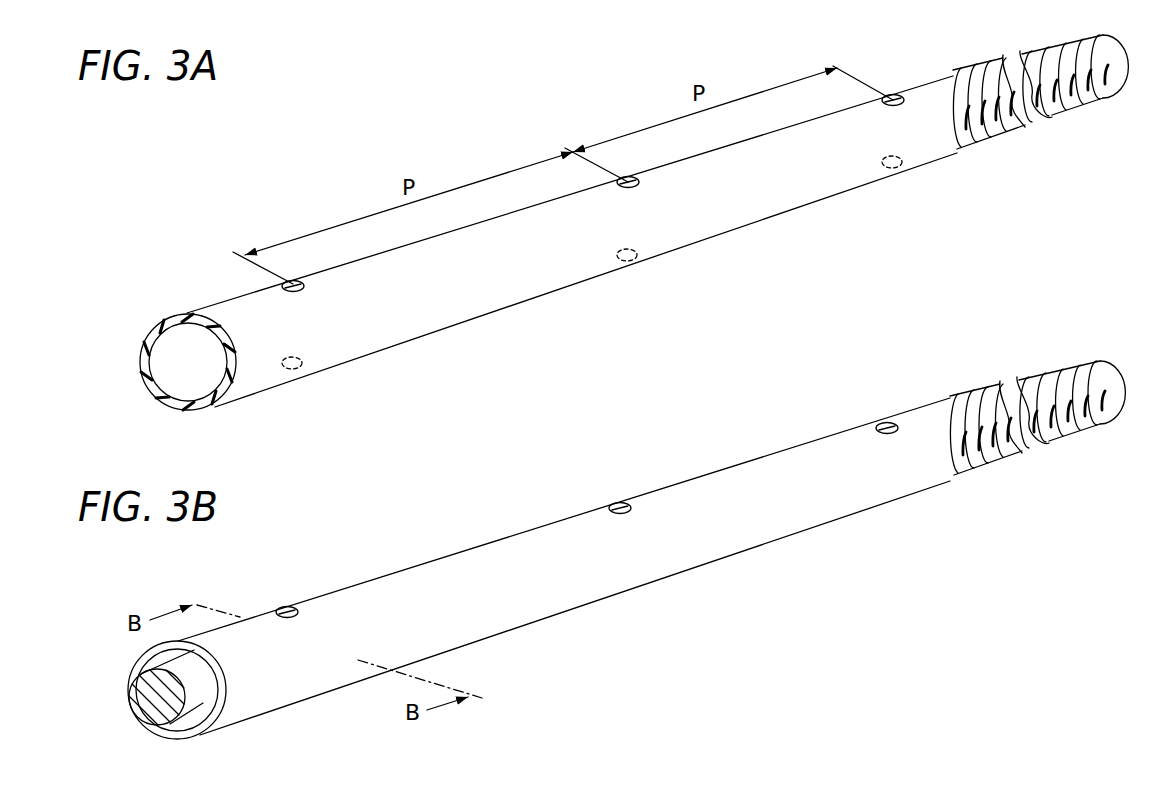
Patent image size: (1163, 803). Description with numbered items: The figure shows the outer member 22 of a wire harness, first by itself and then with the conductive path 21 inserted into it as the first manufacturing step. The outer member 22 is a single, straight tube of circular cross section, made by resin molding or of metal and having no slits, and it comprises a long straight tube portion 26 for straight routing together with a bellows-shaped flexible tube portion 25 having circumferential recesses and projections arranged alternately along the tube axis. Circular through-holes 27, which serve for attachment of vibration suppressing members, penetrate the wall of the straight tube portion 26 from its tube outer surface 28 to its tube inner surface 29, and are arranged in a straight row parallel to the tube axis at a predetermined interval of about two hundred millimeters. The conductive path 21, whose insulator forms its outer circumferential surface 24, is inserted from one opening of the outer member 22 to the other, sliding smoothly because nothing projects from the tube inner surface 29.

In FIG. 3B, the conductive path 21 is at (195, 677).
In FIG. 3A, the outer member 22 is at (527, 282).
In FIG. 3B, the outer member 22 is at (520, 608).
In FIG. 3B, the outer circumferential surface 24 is at (203, 703).
In FIG. 3A, the flexible tube portion 25 is at (1097, 100).
In FIG. 3B, the flexible tube portion 25 is at (1097, 432).
In FIG. 3A, the straight tube portion 26 is at (787, 195).
In FIG. 3B, the straight tube portion 26 is at (782, 522).
In FIG. 3A, the through-hole 27 is at (305, 286).
In FIG. 3B, the through-hole 27 is at (287, 606).
In FIG. 3A, the tube outer surface 28 is at (228, 308).
In FIG. 3B, the tube outer surface 28 is at (260, 625).
In FIG. 3A, the tube inner surface 29 is at (195, 385).
In FIG. 3B, the tube inner surface 29 is at (148, 664).